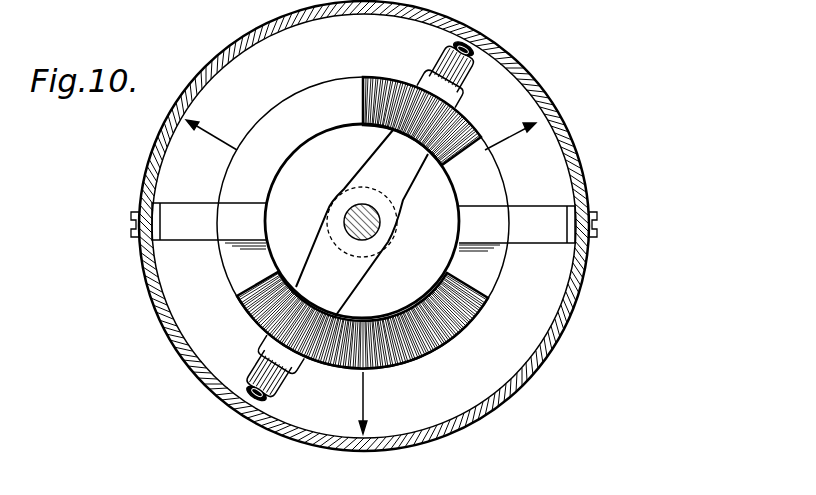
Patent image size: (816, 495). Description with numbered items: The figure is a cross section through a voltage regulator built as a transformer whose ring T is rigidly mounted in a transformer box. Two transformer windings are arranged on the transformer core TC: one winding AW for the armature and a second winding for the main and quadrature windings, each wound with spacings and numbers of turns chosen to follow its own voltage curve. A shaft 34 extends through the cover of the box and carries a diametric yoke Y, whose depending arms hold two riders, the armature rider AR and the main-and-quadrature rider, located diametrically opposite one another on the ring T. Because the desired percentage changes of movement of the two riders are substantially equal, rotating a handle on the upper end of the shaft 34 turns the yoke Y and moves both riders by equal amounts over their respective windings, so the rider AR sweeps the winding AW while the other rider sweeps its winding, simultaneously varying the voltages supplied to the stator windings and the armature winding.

The transformer ring T is at (532, 158).
The shaft 34 is at (347, 219).
The yoke Y is at (398, 180).
The armature winding AW is at (383, 317).
The transformer core TC is at (480, 278).
The armature rider AR is at (278, 377).